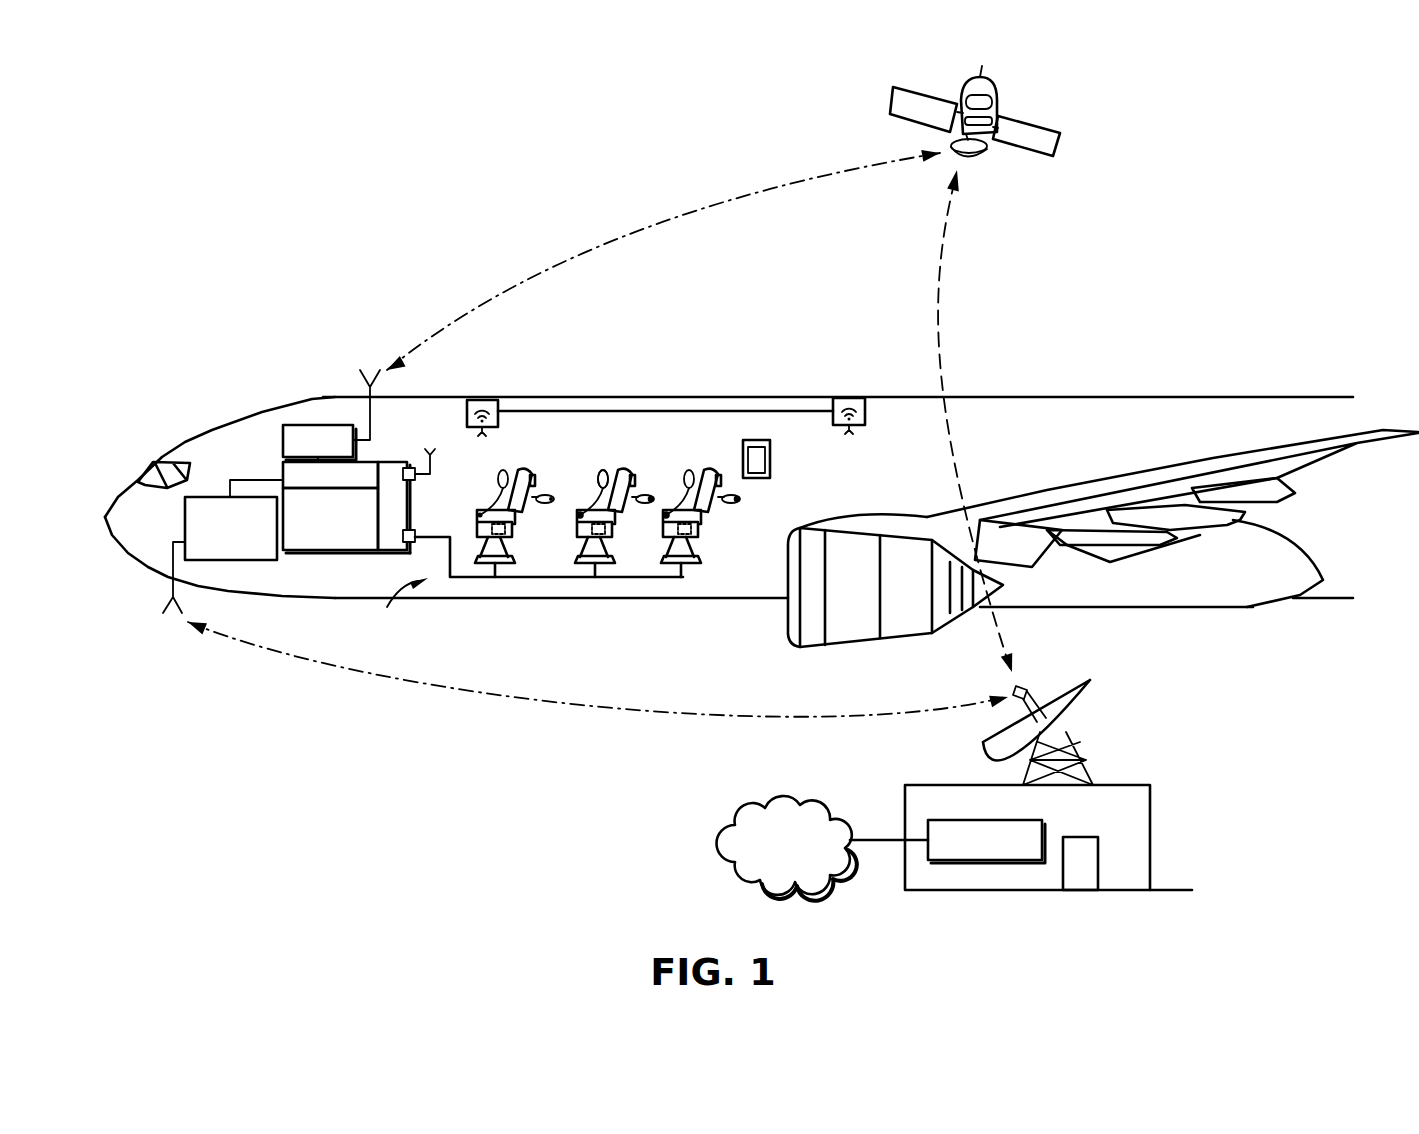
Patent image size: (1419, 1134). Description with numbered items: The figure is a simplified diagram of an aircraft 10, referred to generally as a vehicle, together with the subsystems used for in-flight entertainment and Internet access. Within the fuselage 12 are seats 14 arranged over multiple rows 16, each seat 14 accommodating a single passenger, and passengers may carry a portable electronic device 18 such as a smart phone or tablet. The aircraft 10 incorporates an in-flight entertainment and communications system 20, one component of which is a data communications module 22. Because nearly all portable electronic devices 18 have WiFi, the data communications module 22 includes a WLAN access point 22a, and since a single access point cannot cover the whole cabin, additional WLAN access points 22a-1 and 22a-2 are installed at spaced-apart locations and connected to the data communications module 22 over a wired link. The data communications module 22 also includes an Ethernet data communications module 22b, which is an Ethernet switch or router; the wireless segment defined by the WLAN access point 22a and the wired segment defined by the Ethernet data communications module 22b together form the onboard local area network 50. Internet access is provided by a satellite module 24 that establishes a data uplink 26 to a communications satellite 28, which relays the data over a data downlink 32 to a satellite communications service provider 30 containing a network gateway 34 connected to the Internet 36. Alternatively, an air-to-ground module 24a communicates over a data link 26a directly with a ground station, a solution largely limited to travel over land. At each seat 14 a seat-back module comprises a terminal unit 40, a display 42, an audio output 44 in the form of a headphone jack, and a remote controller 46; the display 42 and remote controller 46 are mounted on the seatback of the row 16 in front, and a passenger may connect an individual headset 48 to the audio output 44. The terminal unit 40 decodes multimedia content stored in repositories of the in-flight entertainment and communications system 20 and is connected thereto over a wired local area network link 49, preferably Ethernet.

The aircraft 10 is at (691, 691).
The fuselage 12 is at (1047, 397).
The seat 14 is at (697, 541).
The rows 16 is at (467, 587).
The portable electronic device 18 is at (770, 452).
The in-flight entertainment and communications system 20 is at (316, 550).
The data communications module 22 is at (388, 462).
The WLAN access point 22a is at (410, 466).
The additional WLAN access point 22a-1 is at (482, 399).
The additional WLAN access point 22a-2 is at (852, 398).
The Ethernet data communications module 22b is at (415, 543).
The satellite module 24 is at (307, 425).
The air-to-ground module 24a is at (255, 560).
The data uplink 26 is at (623, 237).
The data link 26a is at (465, 698).
The communications satellite 28 is at (993, 137).
The satellite communications service provider 30 is at (928, 785).
The data downlink 32 is at (938, 287).
The network gateway 34 is at (973, 860).
The Internet 36 is at (772, 797).
The terminal unit 40 is at (283, 467).
The display 42 is at (540, 483).
The audio output 44 is at (578, 512).
The remote controller 46 is at (545, 505).
The headset 48 is at (606, 480).
The wired local area network link 49 is at (442, 537).
The onboard local area network 50 is at (398, 606).